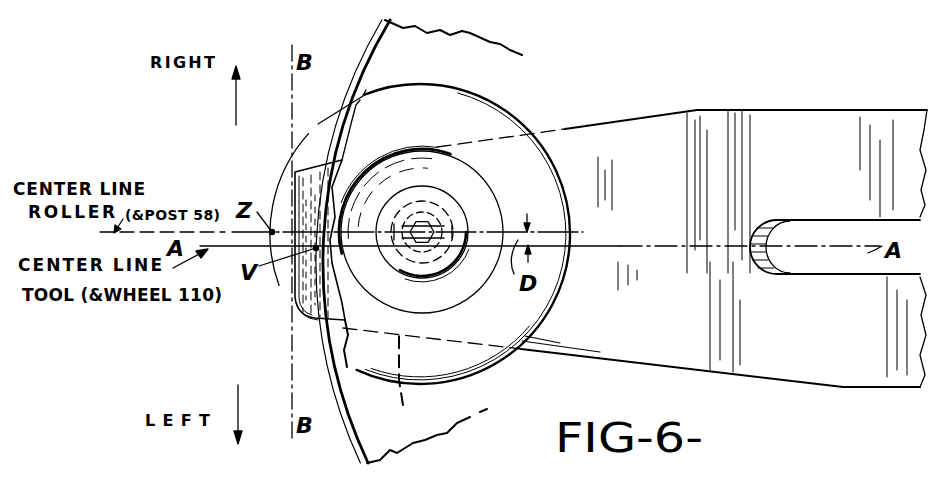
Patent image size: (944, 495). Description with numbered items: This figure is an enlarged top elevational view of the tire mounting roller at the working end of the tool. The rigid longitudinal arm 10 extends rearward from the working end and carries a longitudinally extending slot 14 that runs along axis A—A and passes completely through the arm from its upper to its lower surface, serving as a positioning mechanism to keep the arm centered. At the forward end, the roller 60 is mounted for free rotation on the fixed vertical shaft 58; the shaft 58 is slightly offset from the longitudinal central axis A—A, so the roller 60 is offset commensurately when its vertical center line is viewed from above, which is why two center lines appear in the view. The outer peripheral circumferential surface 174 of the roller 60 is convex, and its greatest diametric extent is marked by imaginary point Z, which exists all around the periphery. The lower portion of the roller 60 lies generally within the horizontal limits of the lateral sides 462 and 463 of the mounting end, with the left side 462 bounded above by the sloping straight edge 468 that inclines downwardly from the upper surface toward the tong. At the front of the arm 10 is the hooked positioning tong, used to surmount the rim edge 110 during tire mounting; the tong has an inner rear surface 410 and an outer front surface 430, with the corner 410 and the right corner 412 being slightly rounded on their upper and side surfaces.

The arm 10 is at (885, 390).
The longitudinally extending slot 14 is at (851, 228).
The vertical shaft 58 is at (418, 194).
The roller 60 is at (512, 118).
The rim edge 110 is at (355, 449).
The peripheral circumferential surface 174 is at (478, 371).
The inner rear surface 410 is at (292, 318).
The right corner 412 is at (296, 180).
The outer front surface 430 is at (292, 281).
The left side 462 is at (555, 357).
The right lateral side 463 is at (583, 122).
The sloping straight edge 468 is at (428, 383).